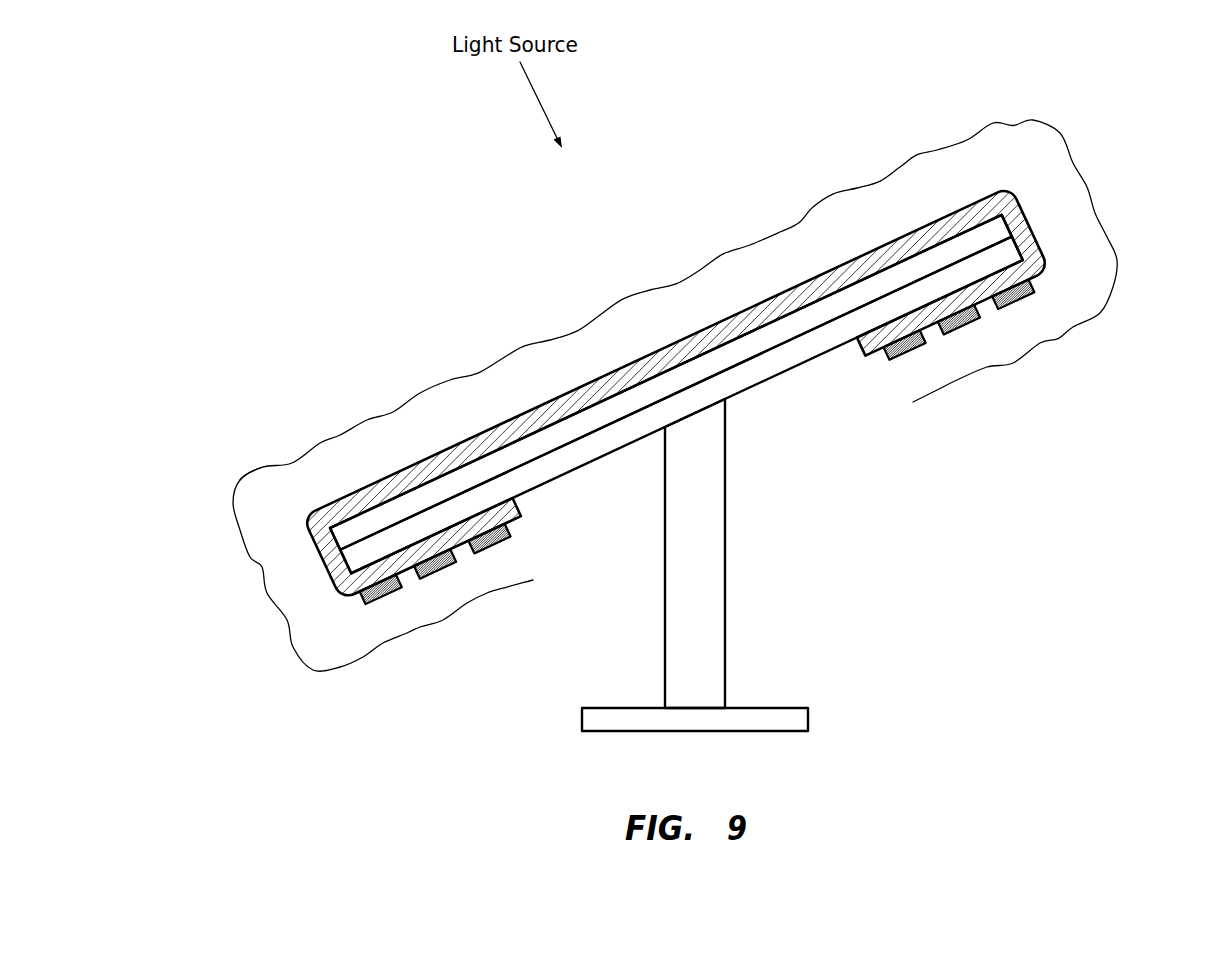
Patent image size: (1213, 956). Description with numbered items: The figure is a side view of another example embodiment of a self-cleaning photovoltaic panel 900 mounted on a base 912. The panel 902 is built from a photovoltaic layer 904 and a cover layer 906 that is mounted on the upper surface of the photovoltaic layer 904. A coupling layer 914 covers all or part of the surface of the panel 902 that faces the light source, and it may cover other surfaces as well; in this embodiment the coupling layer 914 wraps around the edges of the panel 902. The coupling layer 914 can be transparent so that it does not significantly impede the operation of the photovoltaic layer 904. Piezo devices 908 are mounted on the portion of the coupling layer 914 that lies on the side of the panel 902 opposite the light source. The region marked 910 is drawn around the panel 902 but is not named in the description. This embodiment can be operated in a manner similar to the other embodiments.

The solar cell assembly 900 is at (371, 276).
The encapsulant 902 is at (1105, 143).
The second layer 904 is at (681, 405).
The first layer 906 is at (671, 382).
The contacts 908 is at (700, 440).
The protective coating 910 is at (858, 188).
The support stand 912 is at (703, 587).
The frame 914 is at (680, 438).